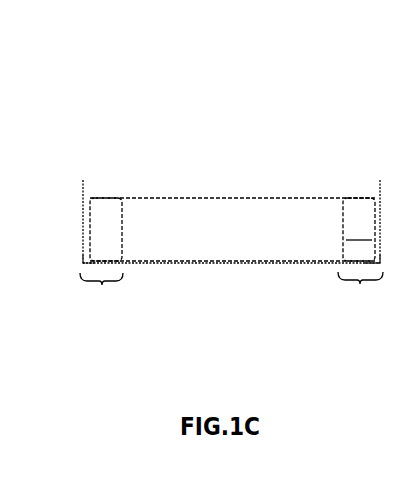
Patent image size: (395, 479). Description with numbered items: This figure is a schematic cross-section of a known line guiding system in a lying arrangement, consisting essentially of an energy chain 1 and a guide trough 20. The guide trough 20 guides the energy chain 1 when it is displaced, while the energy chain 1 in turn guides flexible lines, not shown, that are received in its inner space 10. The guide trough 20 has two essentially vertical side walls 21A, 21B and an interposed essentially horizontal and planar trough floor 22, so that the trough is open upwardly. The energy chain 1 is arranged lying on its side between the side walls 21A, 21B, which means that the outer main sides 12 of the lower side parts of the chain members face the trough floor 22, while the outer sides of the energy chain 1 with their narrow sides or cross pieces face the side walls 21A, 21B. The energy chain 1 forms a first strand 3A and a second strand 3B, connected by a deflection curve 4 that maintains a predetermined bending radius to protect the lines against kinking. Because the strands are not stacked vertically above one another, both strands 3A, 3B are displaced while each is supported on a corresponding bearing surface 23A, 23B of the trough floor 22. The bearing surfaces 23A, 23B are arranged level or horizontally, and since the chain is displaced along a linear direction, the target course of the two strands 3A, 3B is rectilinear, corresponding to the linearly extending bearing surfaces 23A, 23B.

The energy chain 1 is at (206, 144).
The guide trough 20 is at (94, 176).
The side wall 21A is at (83, 180).
The side wall 21B is at (380, 180).
The trough floor 22 is at (200, 259).
The deflection curve 4 is at (270, 197).
The first strand 3A is at (132, 222).
The second strand 3B is at (333, 212).
The inner space 10 is at (119, 238).
The outer main side 12 is at (96, 266).
The bearing surface 23A is at (101, 292).
The bearing surface 23B is at (362, 294).